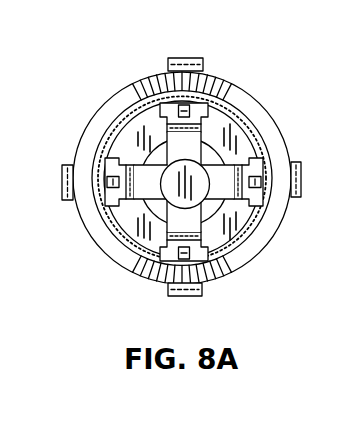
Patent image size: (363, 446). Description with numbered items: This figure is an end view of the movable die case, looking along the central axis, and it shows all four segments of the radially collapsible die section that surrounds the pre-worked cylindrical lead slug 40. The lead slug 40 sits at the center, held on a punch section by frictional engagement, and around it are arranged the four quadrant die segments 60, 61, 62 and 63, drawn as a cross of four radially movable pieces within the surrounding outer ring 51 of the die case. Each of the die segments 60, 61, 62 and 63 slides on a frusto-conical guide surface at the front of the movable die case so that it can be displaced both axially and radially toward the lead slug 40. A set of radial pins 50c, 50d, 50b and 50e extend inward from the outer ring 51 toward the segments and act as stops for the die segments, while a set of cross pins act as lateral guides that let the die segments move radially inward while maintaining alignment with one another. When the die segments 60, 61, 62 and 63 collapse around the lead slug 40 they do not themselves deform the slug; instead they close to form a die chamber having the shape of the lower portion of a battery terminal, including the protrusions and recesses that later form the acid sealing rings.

The pre-worked cylindrical lead slug 40 is at (168, 138).
The radial pin 50b is at (190, 296).
The radial pin 50c is at (172, 58).
The radial pin 50d is at (301, 178).
The radial pin 50e is at (62, 183).
The outer housing ring 51 is at (182, 168).
The die segment 60 is at (245, 121).
The die segment 61 is at (246, 240).
The die segment 62 is at (125, 215).
The die segment 63 is at (118, 140).